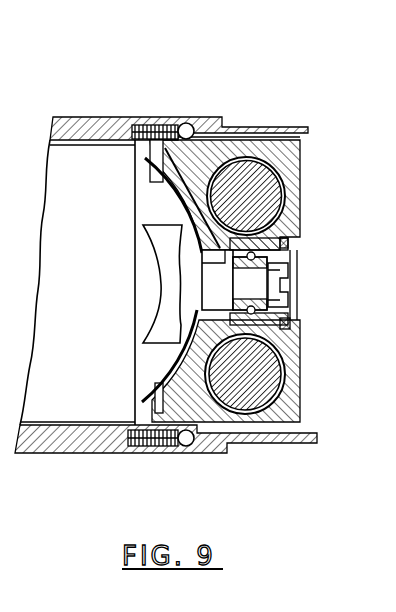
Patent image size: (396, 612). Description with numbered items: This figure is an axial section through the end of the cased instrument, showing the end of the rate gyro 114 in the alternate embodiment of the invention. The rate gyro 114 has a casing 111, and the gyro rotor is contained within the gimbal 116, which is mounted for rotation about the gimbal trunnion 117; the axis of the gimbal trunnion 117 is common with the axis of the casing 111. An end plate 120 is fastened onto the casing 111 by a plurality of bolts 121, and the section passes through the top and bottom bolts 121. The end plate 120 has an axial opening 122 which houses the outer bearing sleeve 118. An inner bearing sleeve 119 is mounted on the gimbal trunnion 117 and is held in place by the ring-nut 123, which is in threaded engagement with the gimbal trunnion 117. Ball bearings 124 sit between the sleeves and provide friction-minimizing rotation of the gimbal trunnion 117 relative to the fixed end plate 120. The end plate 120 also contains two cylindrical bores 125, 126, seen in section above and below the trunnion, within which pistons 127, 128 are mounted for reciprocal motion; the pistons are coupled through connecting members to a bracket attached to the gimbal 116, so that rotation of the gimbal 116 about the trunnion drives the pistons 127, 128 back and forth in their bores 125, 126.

The casing 111 is at (125, 118).
The rate gyro 114 is at (93, 108).
The gimbal 116 is at (165, 378).
The gimbal trunnion 117 is at (264, 294).
The outer bearing sleeve 118 is at (285, 324).
The inner bearing sleeve 119 is at (260, 311).
The end plate 120 is at (300, 163).
The bolts 121 is at (181, 440).
The axial opening 122 is at (300, 238).
The ring-nut 123 is at (277, 298).
The ball bearings 124 is at (260, 257).
The cylindrical bore 125 is at (287, 178).
The cylindrical bore 126 is at (297, 358).
The piston 127 is at (273, 195).
The piston 128 is at (267, 375).